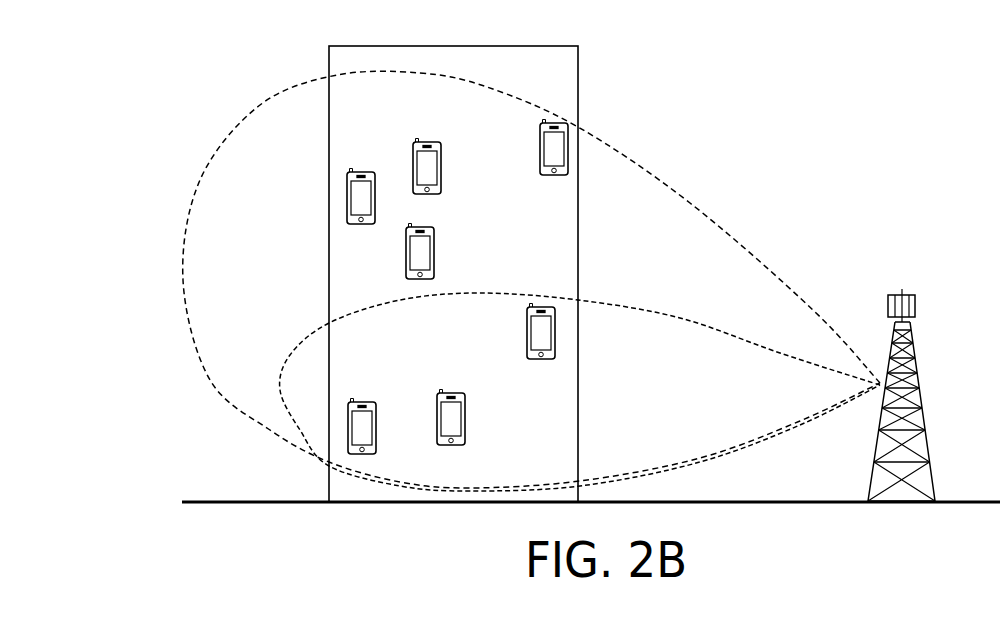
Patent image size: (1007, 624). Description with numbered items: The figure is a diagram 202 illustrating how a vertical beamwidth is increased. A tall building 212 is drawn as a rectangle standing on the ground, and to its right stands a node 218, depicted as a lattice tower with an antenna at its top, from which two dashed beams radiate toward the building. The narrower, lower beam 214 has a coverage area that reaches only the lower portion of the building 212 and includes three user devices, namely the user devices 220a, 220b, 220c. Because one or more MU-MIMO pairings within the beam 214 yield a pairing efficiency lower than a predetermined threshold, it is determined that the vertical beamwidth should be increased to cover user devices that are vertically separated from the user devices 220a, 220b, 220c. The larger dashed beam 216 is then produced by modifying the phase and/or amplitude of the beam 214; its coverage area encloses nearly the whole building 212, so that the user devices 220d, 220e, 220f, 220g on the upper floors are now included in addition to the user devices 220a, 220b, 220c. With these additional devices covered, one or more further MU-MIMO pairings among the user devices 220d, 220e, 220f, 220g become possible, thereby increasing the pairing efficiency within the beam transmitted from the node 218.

The wireless communication environment 202 is at (110, 104).
The building 212 is at (579, 72).
The beam 214 is at (657, 311).
The beam 216 is at (693, 204).
The base station tower 218 is at (912, 362).
The user device 220a is at (359, 401).
The user device 220b is at (465, 418).
The user device 220c is at (526, 331).
The user device 220d is at (435, 250).
The user device 220e is at (358, 171).
The user device 220f is at (442, 170).
The user device 220g is at (540, 143).